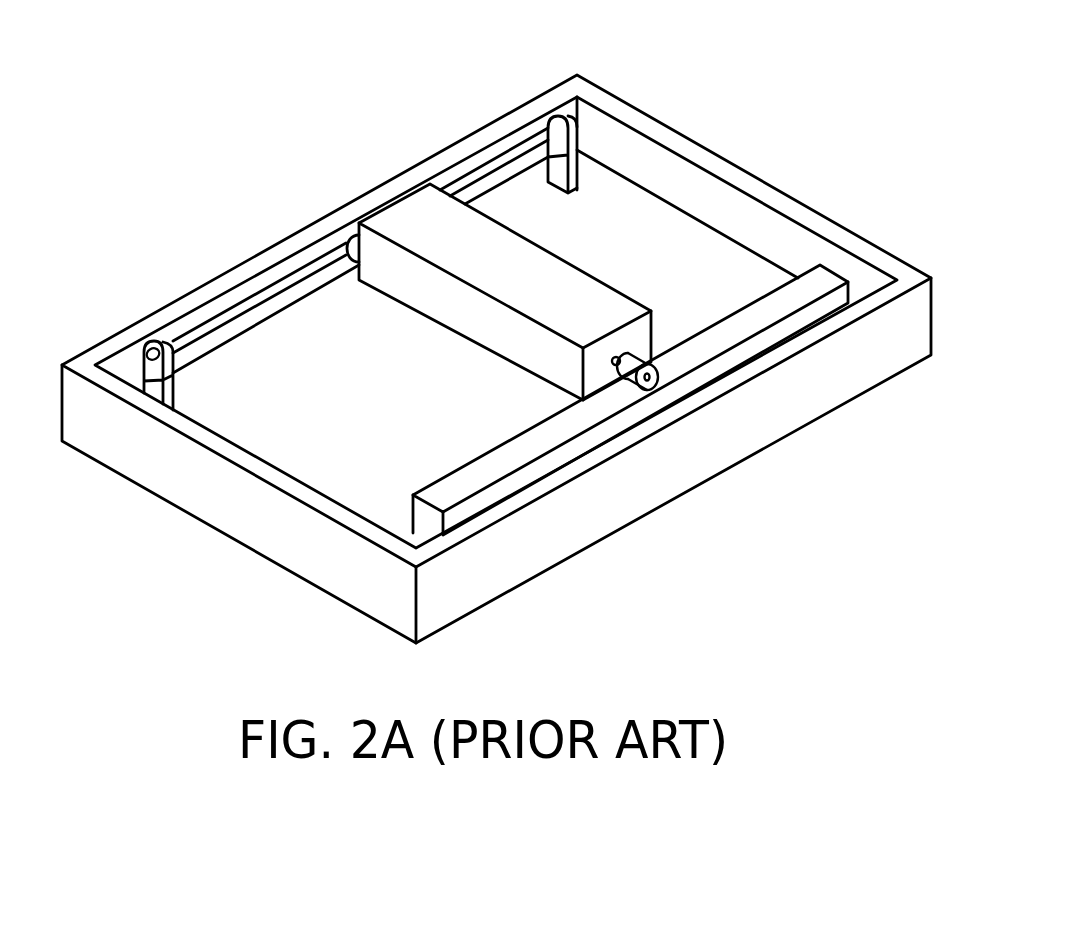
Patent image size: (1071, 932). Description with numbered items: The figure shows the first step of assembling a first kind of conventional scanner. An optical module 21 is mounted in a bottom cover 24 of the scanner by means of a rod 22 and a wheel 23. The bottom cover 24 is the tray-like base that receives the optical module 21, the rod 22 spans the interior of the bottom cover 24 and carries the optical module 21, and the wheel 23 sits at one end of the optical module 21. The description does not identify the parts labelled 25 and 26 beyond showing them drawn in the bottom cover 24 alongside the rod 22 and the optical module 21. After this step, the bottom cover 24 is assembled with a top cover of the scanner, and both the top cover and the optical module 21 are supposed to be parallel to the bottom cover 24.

The optical module 21 is at (413, 207).
The rod 22 is at (291, 283).
The wheel 23 is at (660, 368).
The bottom cover 24 is at (665, 123).
The bearing block 25 is at (172, 317).
The guide rail 26 is at (492, 517).